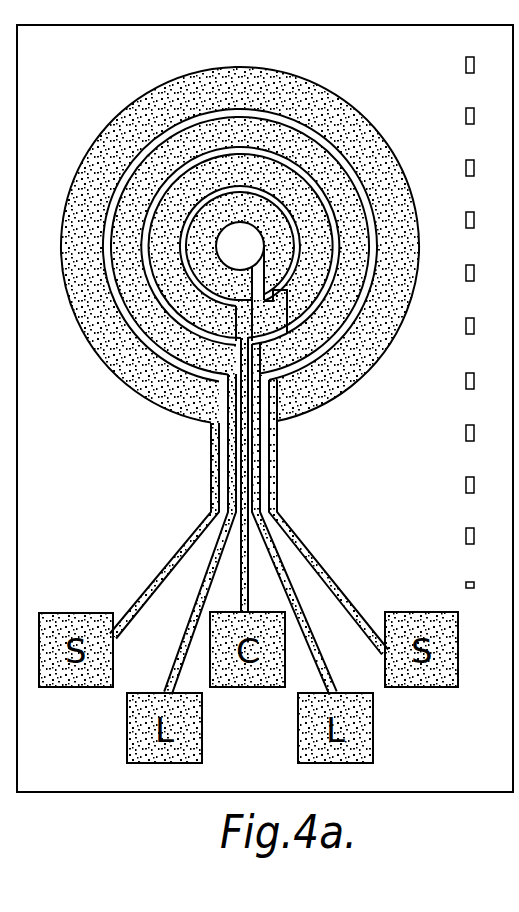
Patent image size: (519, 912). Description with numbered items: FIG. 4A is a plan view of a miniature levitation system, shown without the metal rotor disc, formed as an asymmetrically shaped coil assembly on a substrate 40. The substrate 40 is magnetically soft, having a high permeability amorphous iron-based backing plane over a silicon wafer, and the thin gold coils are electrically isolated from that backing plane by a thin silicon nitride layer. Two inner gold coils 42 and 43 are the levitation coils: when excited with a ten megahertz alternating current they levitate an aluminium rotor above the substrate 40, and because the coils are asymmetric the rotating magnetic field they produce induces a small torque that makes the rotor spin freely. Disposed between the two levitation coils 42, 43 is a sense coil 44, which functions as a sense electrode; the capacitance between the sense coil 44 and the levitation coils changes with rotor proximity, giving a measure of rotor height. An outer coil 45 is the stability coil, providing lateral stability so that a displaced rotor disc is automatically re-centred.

The substrate 40 is at (116, 506).
The inner gold coil 42 is at (243, 220).
The inner gold coil 43 is at (243, 143).
The sense coil 44 is at (243, 182).
The outer coil 45 is at (243, 103).